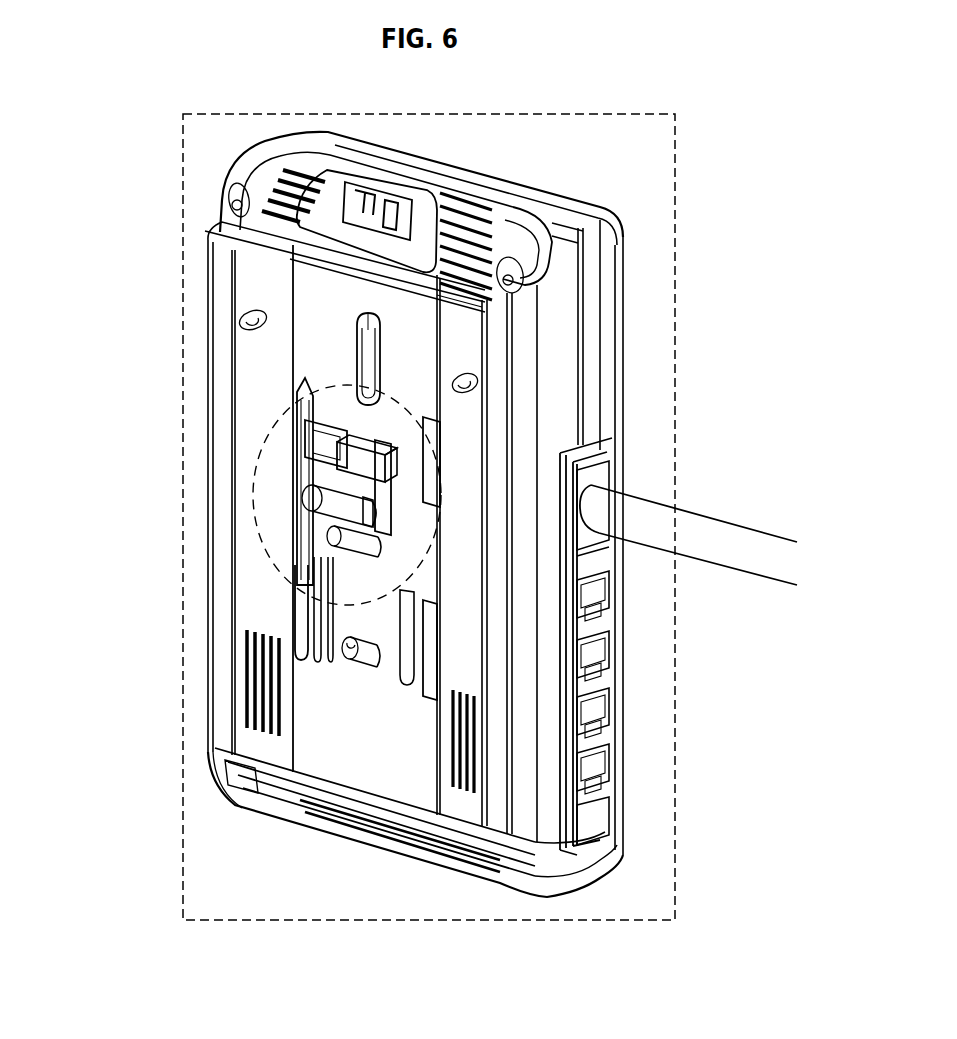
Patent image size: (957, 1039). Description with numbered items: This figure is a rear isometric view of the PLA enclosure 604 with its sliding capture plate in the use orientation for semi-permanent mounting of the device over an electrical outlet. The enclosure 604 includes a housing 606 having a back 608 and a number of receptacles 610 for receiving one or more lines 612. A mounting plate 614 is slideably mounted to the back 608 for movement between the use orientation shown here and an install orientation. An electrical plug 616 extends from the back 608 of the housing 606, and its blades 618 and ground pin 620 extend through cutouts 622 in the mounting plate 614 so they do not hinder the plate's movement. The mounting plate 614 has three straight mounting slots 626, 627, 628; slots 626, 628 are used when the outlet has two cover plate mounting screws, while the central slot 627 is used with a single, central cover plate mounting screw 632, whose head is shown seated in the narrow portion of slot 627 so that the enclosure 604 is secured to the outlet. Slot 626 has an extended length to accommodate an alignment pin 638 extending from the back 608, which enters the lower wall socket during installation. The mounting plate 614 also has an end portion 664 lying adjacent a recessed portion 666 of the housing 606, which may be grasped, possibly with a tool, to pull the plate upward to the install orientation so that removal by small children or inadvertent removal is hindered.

The PLA enclosure 604 is at (675, 168).
The housing 606 is at (620, 258).
The back 608 is at (453, 333).
The receptacles 610 is at (587, 663).
The lines 612 is at (698, 520).
The mounting plate 614 is at (413, 720).
The electrical plug 616 is at (273, 430).
The blades 618 is at (300, 378).
The ground pin 620 is at (303, 497).
The cutouts 622 is at (372, 478).
The mounting slot 626 is at (360, 740).
The mounting slot 627 is at (298, 586).
The mounting slot 628 is at (357, 322).
The central cover plate mounting screw 632 is at (330, 537).
The alignment pin 638 is at (345, 647).
The end portion 664 is at (397, 223).
The recessed portion 666 is at (508, 212).